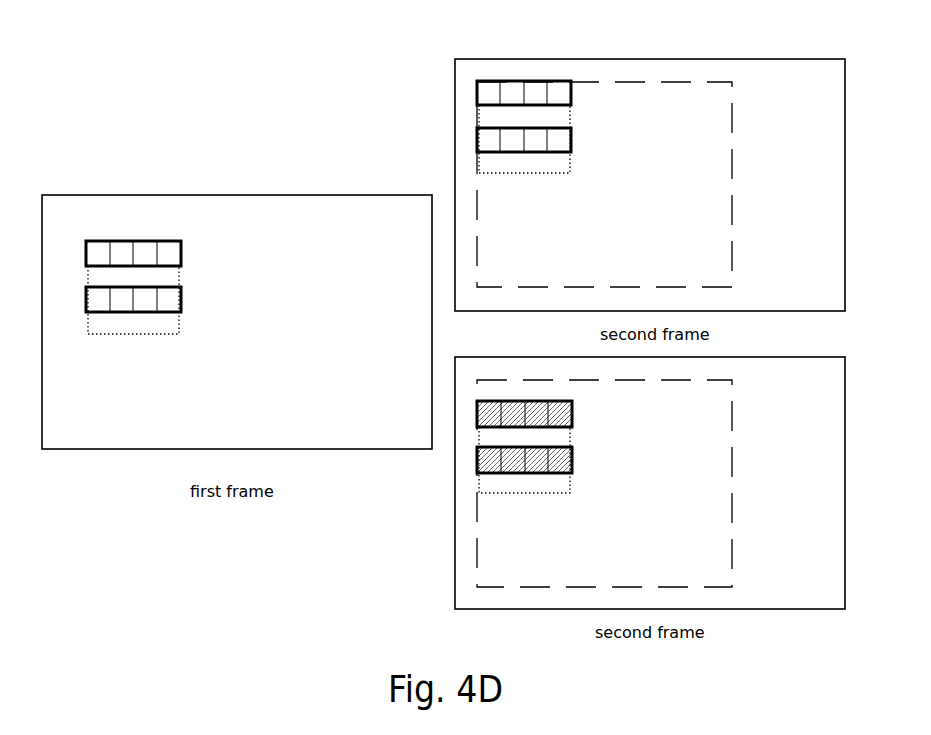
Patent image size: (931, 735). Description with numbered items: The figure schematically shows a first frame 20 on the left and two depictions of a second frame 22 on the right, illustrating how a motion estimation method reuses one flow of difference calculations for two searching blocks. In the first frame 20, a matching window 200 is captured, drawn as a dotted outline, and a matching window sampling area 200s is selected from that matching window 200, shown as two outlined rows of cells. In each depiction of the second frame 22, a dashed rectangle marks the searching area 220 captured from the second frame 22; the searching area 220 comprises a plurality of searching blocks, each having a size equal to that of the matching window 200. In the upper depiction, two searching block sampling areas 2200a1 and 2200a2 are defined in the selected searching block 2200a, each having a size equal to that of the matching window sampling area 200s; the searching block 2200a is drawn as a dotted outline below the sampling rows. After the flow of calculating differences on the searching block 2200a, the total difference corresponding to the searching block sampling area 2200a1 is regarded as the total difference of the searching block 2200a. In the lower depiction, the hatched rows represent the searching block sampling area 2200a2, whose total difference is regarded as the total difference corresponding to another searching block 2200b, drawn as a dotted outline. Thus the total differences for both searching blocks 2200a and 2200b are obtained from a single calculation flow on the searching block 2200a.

The first frame 20 is at (302, 195).
The matching window sampling area 200s is at (183, 247).
The matching window 200 is at (181, 319).
The second frame 22 is at (750, 59).
The searching area 220 is at (732, 160).
The searching block sampling area 2200a1 is at (573, 90).
The searching block 2200a is at (571, 173).
The searching block sampling area 2200a2 is at (574, 412).
The searching block 2200b is at (571, 493).